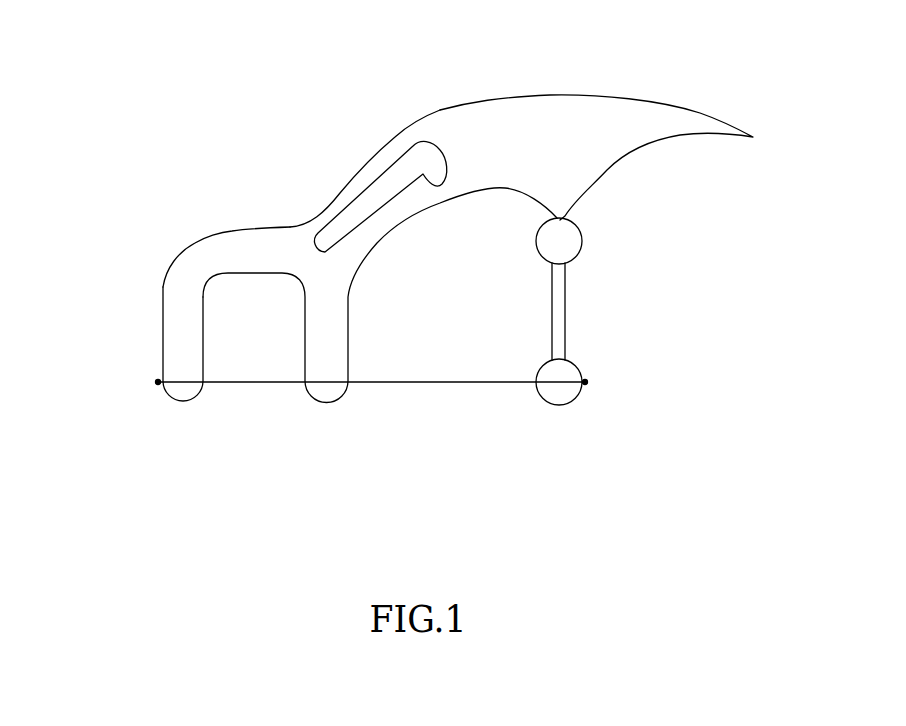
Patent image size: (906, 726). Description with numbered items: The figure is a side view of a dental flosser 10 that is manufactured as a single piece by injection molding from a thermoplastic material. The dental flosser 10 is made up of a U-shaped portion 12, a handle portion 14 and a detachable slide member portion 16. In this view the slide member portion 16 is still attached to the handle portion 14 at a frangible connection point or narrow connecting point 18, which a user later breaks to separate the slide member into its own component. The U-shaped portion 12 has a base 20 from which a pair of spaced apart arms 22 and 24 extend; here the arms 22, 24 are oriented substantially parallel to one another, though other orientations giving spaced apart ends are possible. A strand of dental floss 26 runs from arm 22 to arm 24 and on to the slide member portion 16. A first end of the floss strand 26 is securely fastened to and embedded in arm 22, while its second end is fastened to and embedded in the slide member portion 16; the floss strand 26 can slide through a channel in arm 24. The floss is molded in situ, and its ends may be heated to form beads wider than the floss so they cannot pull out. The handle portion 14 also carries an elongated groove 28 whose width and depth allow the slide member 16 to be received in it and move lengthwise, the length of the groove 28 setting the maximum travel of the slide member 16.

The dental flosser 10 is at (183, 183).
The U-shaped portion 12 is at (228, 247).
The handle portion 14 is at (547, 110).
The slide member portion 16 is at (567, 315).
The frangible connection point 18 is at (565, 222).
The base 20 is at (207, 262).
The arm 22 is at (177, 338).
The arm 24 is at (330, 317).
The strand of dental floss 26 is at (240, 382).
The groove 28 is at (360, 207).